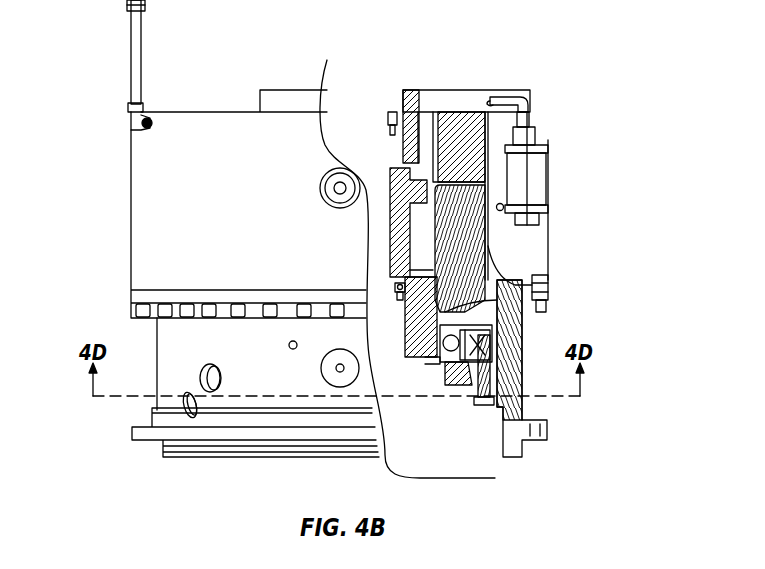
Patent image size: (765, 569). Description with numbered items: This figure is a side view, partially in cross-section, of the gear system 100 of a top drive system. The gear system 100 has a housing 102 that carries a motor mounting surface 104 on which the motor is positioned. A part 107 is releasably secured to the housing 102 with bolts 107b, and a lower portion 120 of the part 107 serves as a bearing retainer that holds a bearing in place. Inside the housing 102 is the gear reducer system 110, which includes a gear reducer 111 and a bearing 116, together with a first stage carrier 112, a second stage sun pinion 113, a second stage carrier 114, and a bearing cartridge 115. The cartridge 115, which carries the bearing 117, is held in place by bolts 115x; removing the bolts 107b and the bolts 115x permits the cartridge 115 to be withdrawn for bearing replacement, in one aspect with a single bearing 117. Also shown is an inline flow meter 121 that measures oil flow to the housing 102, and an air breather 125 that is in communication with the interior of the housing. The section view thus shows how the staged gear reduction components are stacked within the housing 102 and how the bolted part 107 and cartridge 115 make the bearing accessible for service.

The gear system 100 is at (448, 108).
The housing 102 is at (135, 238).
The motor mounting surface 104 is at (190, 112).
The part 107 is at (455, 368).
The bolts 107b is at (548, 283).
The gear reducer system 110 is at (395, 193).
The gear reducer 111 is at (403, 156).
The first stage carrier 112 is at (478, 118).
The second stage sun pinion 113 is at (397, 258).
The second stage carrier 114 is at (480, 250).
The bearing cartridge 115 is at (450, 337).
The bolts 115x is at (472, 405).
The bearing 116 is at (398, 288).
The bearing 117 is at (475, 335).
The lower portion 120 is at (520, 408).
The inline flow meter 121 is at (527, 146).
The air breather 125 is at (133, 43).